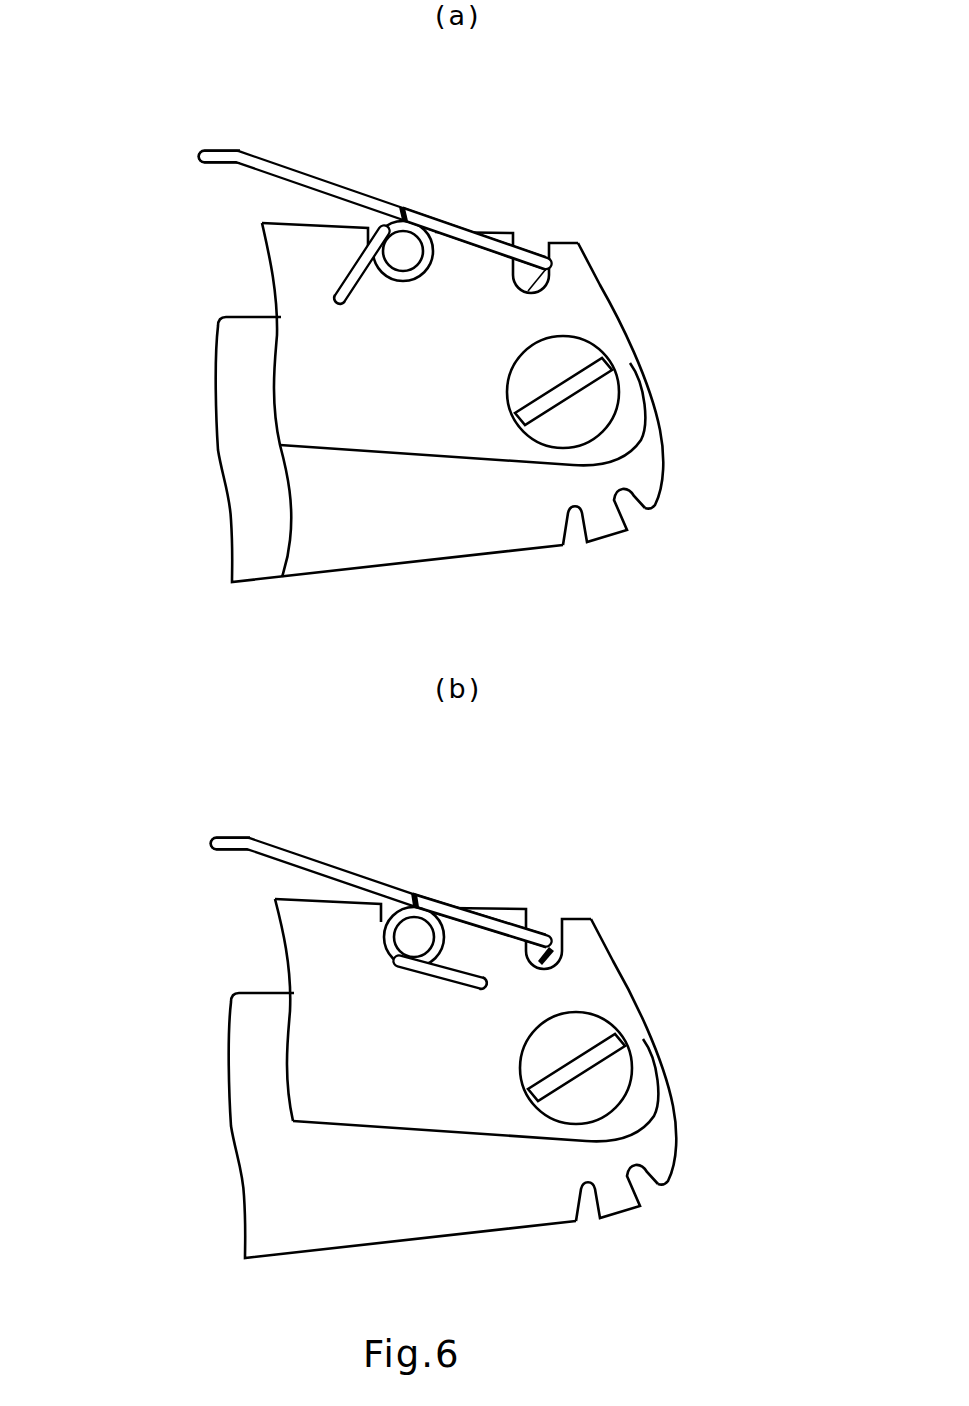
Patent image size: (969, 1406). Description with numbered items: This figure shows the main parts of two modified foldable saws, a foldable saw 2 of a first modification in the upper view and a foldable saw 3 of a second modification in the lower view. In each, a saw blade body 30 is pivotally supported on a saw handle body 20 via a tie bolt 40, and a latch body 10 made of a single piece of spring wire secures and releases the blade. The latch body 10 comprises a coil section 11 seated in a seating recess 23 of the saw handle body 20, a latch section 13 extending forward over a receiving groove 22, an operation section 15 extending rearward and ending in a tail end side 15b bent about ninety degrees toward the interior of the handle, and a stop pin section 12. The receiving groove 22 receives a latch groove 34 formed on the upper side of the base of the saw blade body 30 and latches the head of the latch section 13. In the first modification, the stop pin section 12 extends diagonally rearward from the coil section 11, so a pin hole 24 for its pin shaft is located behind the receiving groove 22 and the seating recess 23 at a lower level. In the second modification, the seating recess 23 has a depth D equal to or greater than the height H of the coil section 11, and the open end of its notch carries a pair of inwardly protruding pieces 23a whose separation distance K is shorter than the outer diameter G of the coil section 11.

The foldable saw 2 is at (391, 122).
The foldable saw 3 is at (359, 749).
The latch body 10 is at (313, 590).
The coil section 11 is at (418, 273).
The stop pin section 12 is at (323, 662).
The latch section 13 is at (463, 232).
The operation section 15 is at (326, 526).
The tail end side 15b is at (210, 152).
The saw handle body 20 is at (407, 425).
The receiving groove 22 is at (544, 213).
The seating recess 23 is at (403, 283).
The inwardly protruding pieces 23a is at (390, 903).
The pin hole 24 is at (347, 302).
The saw blade body 30 is at (430, 547).
The latch groove 34 is at (633, 510).
The tie bolt 40 is at (568, 353).
The depth D is at (263, 968).
The height H is at (263, 910).
The outer diameter G is at (445, 870).
The distance K is at (435, 870).